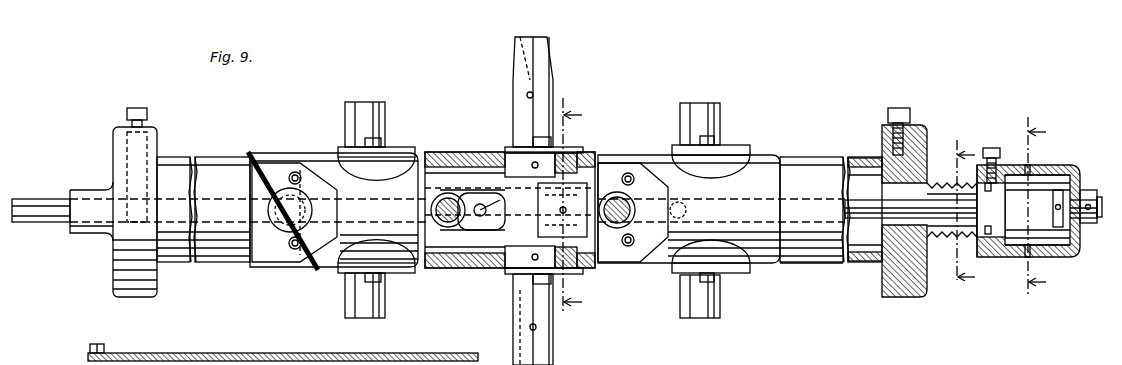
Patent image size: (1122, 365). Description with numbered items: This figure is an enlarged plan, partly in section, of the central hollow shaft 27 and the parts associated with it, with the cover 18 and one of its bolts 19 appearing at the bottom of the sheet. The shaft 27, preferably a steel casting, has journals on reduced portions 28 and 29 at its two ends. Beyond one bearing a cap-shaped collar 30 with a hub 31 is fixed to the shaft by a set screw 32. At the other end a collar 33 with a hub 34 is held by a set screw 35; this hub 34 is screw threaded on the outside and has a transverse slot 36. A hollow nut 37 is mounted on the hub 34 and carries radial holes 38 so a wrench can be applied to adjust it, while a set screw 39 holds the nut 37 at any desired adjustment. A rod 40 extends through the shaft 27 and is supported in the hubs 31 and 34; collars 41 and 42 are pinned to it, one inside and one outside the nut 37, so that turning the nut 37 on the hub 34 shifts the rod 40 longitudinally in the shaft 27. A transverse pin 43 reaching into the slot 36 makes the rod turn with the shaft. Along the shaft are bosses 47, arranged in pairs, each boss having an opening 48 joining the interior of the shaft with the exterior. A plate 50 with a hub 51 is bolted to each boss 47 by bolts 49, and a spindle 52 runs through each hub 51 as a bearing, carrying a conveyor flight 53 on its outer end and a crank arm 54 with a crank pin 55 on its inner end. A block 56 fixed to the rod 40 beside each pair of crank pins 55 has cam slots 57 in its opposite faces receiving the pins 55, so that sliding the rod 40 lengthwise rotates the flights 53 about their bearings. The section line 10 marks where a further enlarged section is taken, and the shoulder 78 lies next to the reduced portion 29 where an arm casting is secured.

The section line 10 is at (579, 211).
The cover 18 is at (252, 353).
The bolts 19 is at (97, 348).
The hollow shaft 27 is at (478, 268).
The reduced portion 28 is at (215, 157).
The reduced portion 29 is at (820, 157).
The collar 30 is at (113, 138).
The hub 31 is at (83, 190).
The set screw 32 is at (137, 107).
The collar 33 is at (882, 130).
The hub 34 is at (942, 240).
The set screw 35 is at (908, 108).
The transverse slot 36 is at (968, 243).
The hollow nut 37 is at (1007, 257).
The radial holes 38 is at (1030, 168).
The set screw 39 is at (991, 148).
The rod 40 is at (45, 225).
The collar 41 is at (1058, 227).
The collar 42 is at (1088, 190).
The transverse pin 43 is at (985, 186).
The bosses 47 is at (690, 262).
The opening 48 is at (580, 152).
The bolts 49 is at (296, 172).
The plate 50 is at (330, 192).
The hub 51 is at (345, 118).
The spindle 52 is at (513, 88).
The conveyor flight 53 is at (258, 152).
The crank arm 54 is at (480, 204).
The crank pin 55 is at (470, 205).
The block 56 is at (545, 210).
The cam slots 57 is at (500, 190).
The shoulder 78 is at (795, 265).